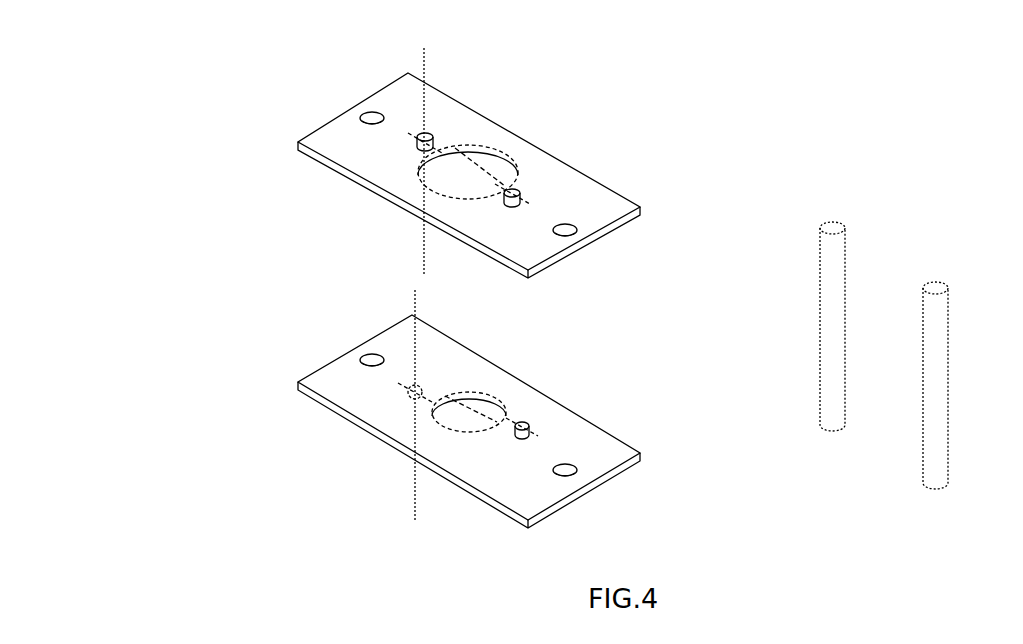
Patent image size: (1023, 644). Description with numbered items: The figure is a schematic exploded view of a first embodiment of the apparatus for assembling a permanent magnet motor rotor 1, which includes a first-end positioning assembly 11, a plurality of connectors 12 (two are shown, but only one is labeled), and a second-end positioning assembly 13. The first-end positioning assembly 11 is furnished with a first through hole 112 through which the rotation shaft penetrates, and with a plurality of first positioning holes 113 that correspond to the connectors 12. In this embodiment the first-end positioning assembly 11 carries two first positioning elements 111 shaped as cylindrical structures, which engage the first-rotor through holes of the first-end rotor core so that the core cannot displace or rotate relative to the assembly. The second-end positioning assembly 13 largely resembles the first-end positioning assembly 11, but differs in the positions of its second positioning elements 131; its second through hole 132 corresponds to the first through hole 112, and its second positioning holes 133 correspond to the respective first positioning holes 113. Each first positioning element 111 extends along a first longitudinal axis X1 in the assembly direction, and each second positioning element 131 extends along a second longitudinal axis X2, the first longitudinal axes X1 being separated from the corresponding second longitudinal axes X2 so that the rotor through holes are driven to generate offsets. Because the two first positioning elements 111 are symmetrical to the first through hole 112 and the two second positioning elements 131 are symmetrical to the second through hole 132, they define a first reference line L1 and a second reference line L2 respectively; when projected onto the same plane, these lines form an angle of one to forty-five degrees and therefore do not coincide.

The apparatus for assembling a permanent magnet motor rotor 1 is at (795, 114).
The first-end positioning assembly 11 is at (298, 143).
The first positioning element 111 is at (430, 138).
The first through hole 112 is at (460, 190).
The first positioning hole 113 is at (578, 232).
The connector 12 is at (940, 365).
The second-end positioning assembly 13 is at (298, 383).
The second positioning element 131 is at (412, 399).
The second through hole 132 is at (462, 428).
The second positioning hole 133 is at (580, 472).
The first reference line L1 is at (470, 164).
The second reference line L2 is at (490, 410).
The first longitudinal axis X1 is at (424, 256).
The second longitudinal axis X2 is at (415, 505).